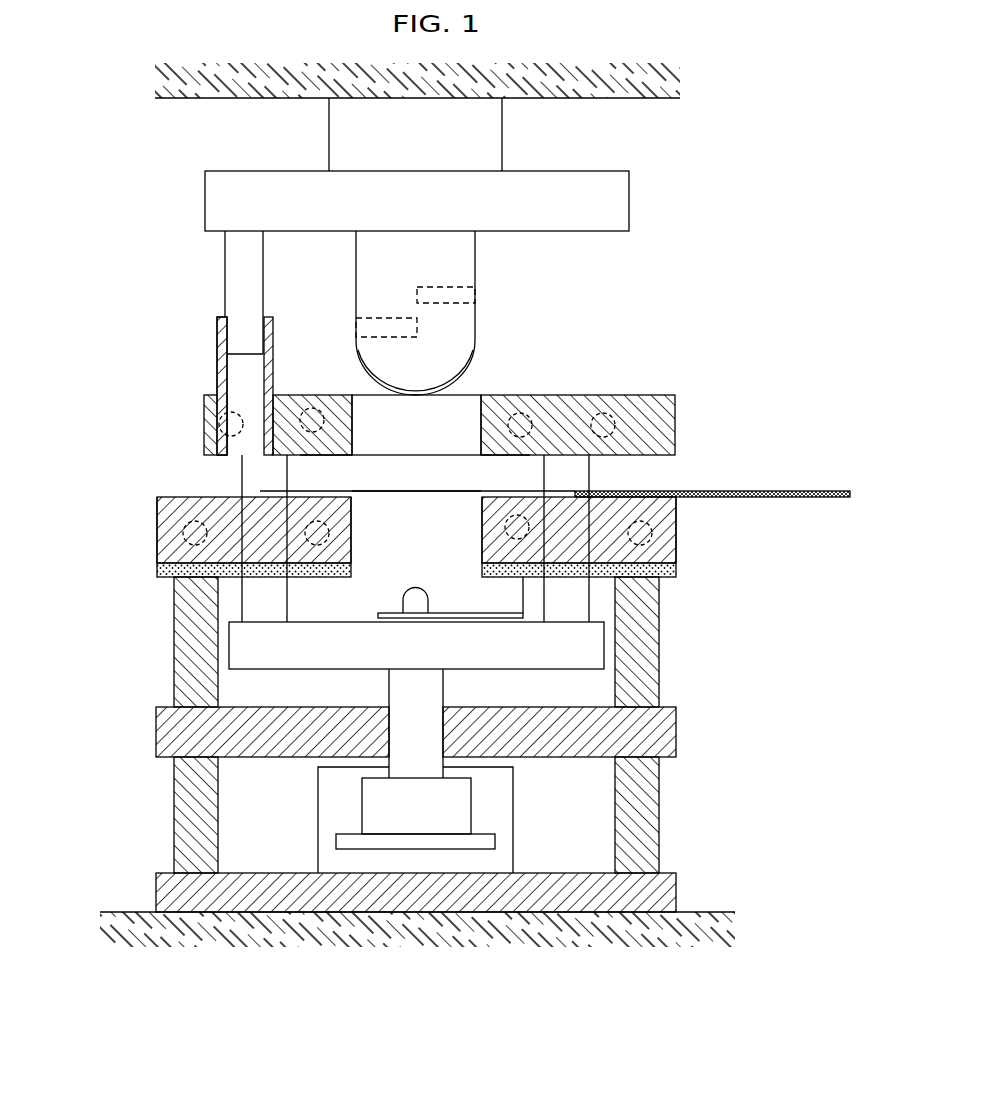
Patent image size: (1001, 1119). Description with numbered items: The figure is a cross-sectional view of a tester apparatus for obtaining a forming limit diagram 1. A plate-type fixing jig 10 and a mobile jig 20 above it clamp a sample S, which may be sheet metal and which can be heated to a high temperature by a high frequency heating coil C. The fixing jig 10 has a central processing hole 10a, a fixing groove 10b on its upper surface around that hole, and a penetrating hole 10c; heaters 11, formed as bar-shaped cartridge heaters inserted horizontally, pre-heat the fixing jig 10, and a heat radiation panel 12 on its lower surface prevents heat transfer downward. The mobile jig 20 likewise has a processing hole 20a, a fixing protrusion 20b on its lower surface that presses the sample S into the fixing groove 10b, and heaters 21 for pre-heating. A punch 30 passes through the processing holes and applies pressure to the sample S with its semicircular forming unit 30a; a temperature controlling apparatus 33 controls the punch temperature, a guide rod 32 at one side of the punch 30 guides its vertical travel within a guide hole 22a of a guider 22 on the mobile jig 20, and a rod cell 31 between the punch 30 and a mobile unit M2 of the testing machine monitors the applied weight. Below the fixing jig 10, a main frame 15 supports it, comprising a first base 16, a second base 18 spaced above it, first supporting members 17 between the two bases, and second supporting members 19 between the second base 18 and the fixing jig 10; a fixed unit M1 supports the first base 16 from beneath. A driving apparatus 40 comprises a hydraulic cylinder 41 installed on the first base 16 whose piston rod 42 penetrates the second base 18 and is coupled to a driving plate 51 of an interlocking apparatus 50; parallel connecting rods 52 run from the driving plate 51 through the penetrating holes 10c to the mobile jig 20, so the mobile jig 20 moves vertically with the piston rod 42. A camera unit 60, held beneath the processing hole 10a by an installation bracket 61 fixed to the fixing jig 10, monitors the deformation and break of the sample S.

The tester apparatus for obtaining a forming limit diagram 1 is at (96, 350).
The fixed unit of the MTS M1 is at (253, 935).
The mobile unit of the MTS M2 is at (170, 99).
The fixing jig 10 is at (155, 540).
The processing hole 10a is at (468, 538).
The fixing groove 10b is at (360, 498).
The penetrating hole 10c is at (345, 550).
The heater 11 is at (205, 522).
The heat radiation panel 12 is at (158, 568).
The main frame 15 is at (423, 744).
The first base 16 is at (158, 887).
The first supporting member 17 is at (175, 833).
The second base 18 is at (158, 731).
The second supporting member 19 is at (175, 605).
The mobile jig 20 is at (678, 431).
The processing hole 20a is at (392, 433).
The fixing protrusion 20b is at (333, 455).
The heater 21 is at (302, 416).
The guider 22 is at (220, 364).
The guide hole 22a is at (241, 400).
The punch 30 is at (483, 276).
The forming unit 30a is at (460, 386).
The rod cell 31 is at (505, 128).
The guide rod 32 is at (237, 318).
The temperature controlling apparatus 33 is at (514, 306).
The driving apparatus 40 is at (516, 808).
The hydraulic cylinder 41 is at (466, 842).
The piston rod 42 is at (407, 768).
The interlocking apparatus 50 is at (227, 640).
The driving plate 51 is at (238, 656).
The connecting rod 52 is at (245, 480).
The camera unit 60 is at (408, 600).
The installation bracket 61 is at (447, 613).
The sample S is at (392, 492).
The high frequency heating coil C is at (782, 491).